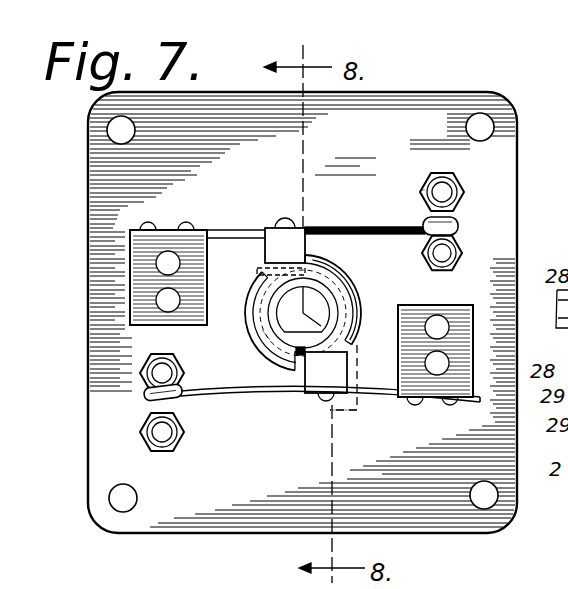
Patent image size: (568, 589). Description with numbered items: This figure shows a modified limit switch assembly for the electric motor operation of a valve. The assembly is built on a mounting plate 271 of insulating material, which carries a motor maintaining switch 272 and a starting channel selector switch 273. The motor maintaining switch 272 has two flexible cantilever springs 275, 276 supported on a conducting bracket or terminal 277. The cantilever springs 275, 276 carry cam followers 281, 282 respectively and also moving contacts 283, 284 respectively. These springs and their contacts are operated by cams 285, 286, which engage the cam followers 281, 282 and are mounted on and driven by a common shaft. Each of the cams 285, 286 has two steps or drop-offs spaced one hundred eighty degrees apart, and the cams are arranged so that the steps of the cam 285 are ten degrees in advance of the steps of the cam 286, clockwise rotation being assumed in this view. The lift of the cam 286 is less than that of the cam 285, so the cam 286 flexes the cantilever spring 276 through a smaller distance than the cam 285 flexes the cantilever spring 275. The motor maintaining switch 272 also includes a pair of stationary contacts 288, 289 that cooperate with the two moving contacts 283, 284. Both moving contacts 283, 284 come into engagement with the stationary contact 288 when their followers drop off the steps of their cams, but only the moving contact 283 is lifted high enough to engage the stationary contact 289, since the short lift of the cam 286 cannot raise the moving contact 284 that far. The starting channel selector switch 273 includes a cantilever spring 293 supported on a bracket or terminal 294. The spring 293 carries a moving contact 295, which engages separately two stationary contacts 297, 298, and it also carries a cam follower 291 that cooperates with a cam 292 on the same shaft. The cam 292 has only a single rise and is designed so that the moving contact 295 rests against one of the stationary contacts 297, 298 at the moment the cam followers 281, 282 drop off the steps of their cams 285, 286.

The mounting plate 271 is at (430, 105).
The motor maintaining switch 272 is at (216, 223).
The starting channel selector switch 273 is at (238, 396).
The flexible cantilever spring 275 is at (396, 236).
The flexible cantilever spring 276 is at (394, 226).
The conducting bracket or terminal 277 is at (138, 270).
The cam follower 281 is at (257, 272).
The cam follower 282 is at (265, 250).
The moving contact 283 is at (458, 228).
The moving contact 284 is at (464, 194).
The cam 285 is at (359, 277).
The cam 286 is at (358, 300).
The stationary contact 288 is at (462, 256).
The stationary contact 289 is at (464, 190).
The cam follower 291 is at (314, 380).
The cam 292 is at (272, 343).
The cantilever spring 293 is at (372, 408).
The bracket or terminal 294 is at (463, 373).
The moving contact 295 is at (148, 396).
The stationary contact 297 is at (146, 378).
The stationary contact 298 is at (162, 452).